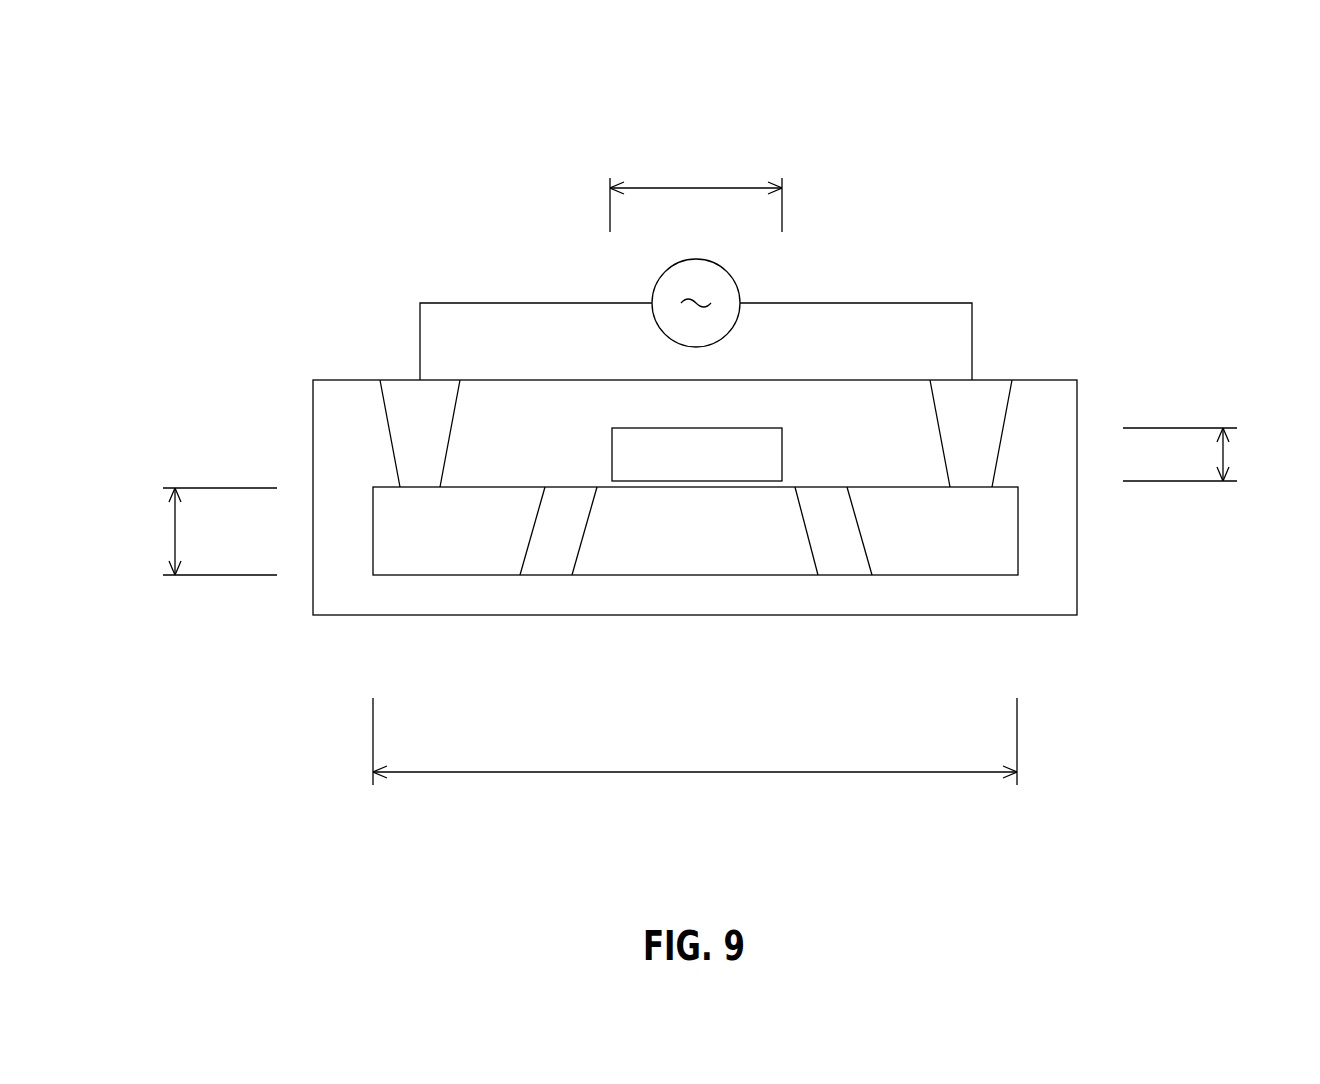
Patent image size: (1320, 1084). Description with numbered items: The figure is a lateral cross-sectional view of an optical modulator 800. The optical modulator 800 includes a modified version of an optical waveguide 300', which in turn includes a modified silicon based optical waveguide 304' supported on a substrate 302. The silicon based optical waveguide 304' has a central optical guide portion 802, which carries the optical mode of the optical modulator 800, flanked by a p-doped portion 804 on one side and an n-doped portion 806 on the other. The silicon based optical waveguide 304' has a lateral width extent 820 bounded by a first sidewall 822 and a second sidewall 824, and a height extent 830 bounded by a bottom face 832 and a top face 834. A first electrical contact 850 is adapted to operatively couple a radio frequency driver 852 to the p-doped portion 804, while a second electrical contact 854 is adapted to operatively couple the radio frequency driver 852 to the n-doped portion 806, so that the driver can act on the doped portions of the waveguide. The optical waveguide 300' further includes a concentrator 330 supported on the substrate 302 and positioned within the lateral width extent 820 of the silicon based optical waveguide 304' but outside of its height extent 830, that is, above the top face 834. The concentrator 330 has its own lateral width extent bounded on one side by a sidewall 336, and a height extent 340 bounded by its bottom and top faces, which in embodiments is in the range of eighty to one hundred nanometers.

The optical modulator 800 is at (977, 165).
The optical waveguide 300' is at (700, 483).
The substrate 302 is at (1025, 592).
The silicon based optical waveguide 304' is at (867, 721).
The concentrator 330 is at (650, 422).
The sidewall 336 is at (695, 188).
The height extent 340 is at (1225, 455).
The central optical guide portion 802 is at (692, 588).
The p-doped portion 804 is at (540, 588).
The n-doped portion 806 is at (915, 583).
The lateral width extent 820 is at (697, 772).
The first sidewall 822 is at (373, 550).
The second sidewall 824 is at (1018, 533).
The height extent 830 is at (173, 532).
The bottom face 832 is at (448, 577).
The top face 834 is at (882, 487).
The first electrical contact 850 is at (413, 433).
The radio frequency driver 852 is at (733, 275).
The second electrical contact 854 is at (987, 393).